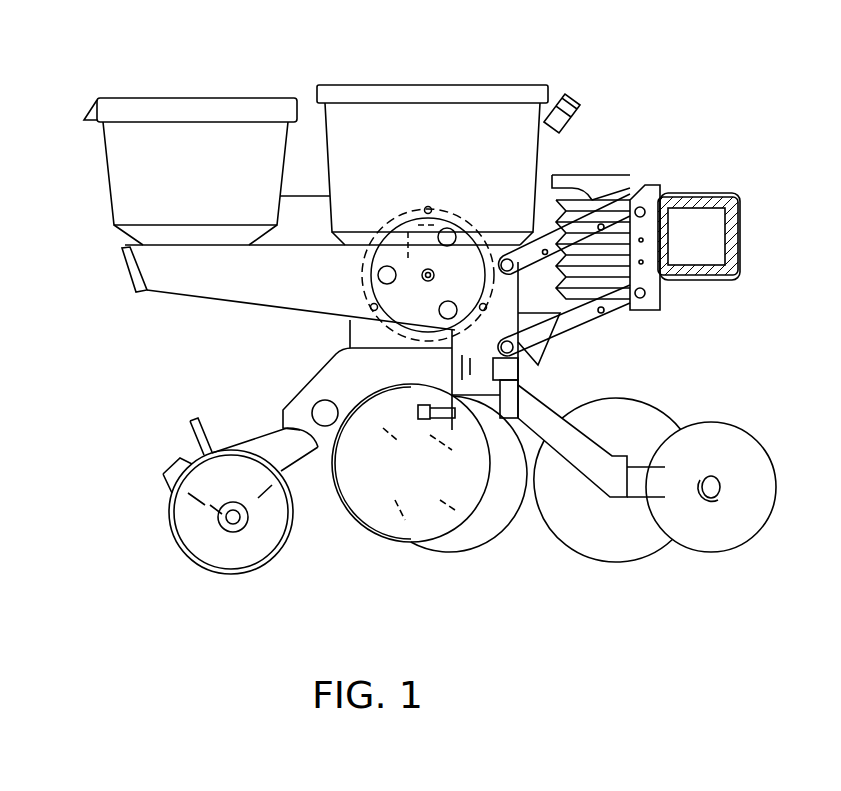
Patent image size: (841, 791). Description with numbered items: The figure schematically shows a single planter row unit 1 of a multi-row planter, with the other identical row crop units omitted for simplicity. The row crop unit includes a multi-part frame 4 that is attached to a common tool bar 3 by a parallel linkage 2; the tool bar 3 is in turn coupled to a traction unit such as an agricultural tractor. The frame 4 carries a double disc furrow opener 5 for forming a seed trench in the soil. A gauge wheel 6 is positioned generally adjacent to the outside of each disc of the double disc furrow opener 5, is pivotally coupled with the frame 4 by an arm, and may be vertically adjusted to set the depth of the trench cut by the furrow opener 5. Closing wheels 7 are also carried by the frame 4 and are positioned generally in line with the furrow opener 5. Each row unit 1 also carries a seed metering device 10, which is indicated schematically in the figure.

The planter row unit 1 is at (600, 64).
The parallel linkage 2 is at (562, 190).
The tool bar 3 is at (740, 245).
The multi-part frame 4 is at (328, 382).
The double disc furrow opener 5 is at (468, 537).
The gauge wheel 6 is at (369, 528).
The closing wheel 7 is at (221, 573).
The seed metering device 10 is at (372, 290).